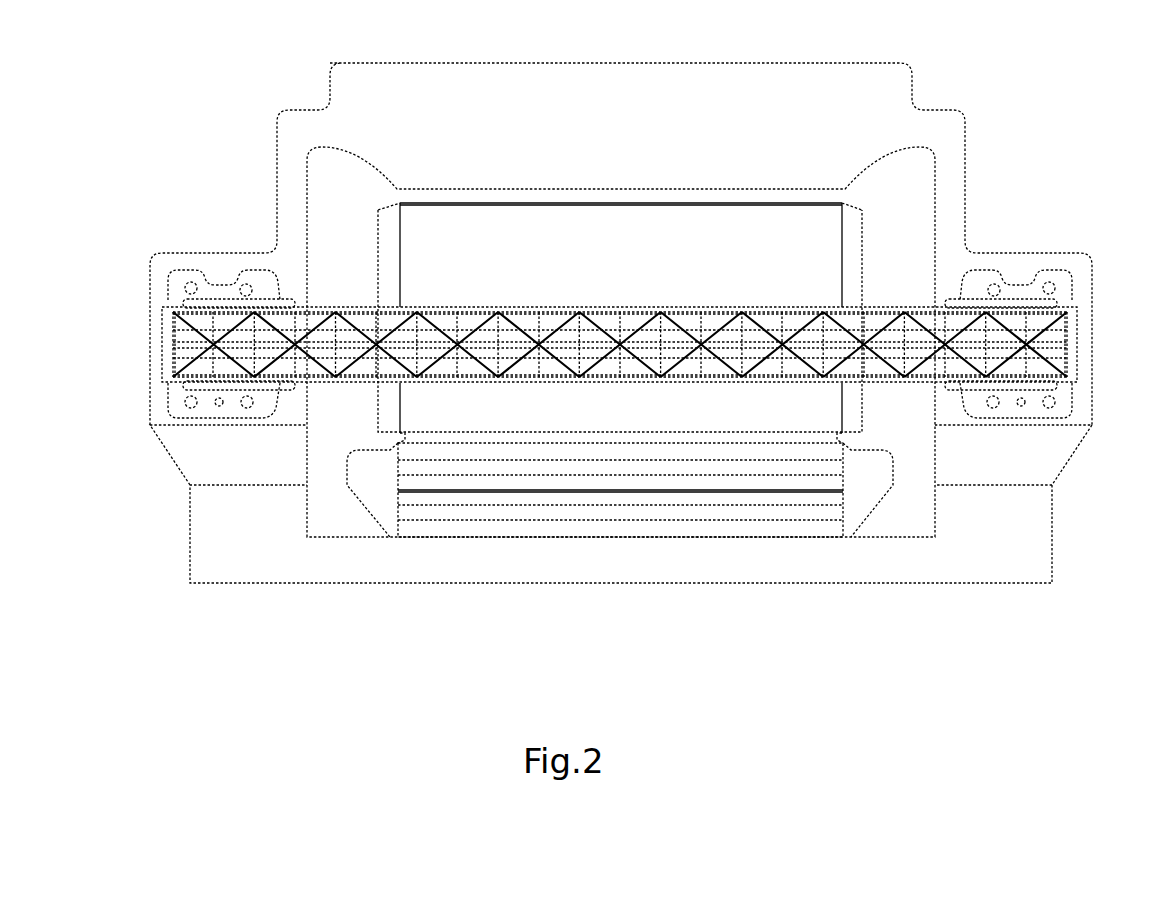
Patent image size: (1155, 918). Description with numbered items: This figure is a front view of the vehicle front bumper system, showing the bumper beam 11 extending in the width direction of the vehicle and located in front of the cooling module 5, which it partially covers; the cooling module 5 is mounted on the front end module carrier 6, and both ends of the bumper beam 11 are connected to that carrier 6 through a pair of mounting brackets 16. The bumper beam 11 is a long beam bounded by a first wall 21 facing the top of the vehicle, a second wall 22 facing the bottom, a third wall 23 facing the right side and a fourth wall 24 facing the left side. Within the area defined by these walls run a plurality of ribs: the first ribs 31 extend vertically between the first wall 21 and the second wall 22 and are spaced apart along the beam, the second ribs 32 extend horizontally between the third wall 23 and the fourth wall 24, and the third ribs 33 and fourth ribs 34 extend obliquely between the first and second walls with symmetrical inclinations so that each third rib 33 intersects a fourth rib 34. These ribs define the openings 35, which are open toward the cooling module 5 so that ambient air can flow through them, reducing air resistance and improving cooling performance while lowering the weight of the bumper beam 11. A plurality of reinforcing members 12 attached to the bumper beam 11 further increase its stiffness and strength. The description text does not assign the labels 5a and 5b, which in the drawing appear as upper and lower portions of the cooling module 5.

The cooling module 5 is at (668, 196).
The upper frame box 5a is at (537, 235).
The lower frame member 5b is at (745, 512).
The front end module (FEM) carrier 6 is at (609, 75).
The bumper beam 11 is at (602, 284).
The reinforcing member 12 is at (786, 330).
The mounting bracket 16 is at (175, 289).
The first wall 21 is at (540, 311).
The second wall 22 is at (612, 384).
The third wall 23 is at (168, 343).
The fourth wall 24 is at (1077, 343).
The first rib 31 is at (749, 318).
The second rib 32 is at (683, 361).
The third rib 33 is at (722, 362).
The fourth rib 34 is at (685, 328).
The opening 35 is at (460, 330).